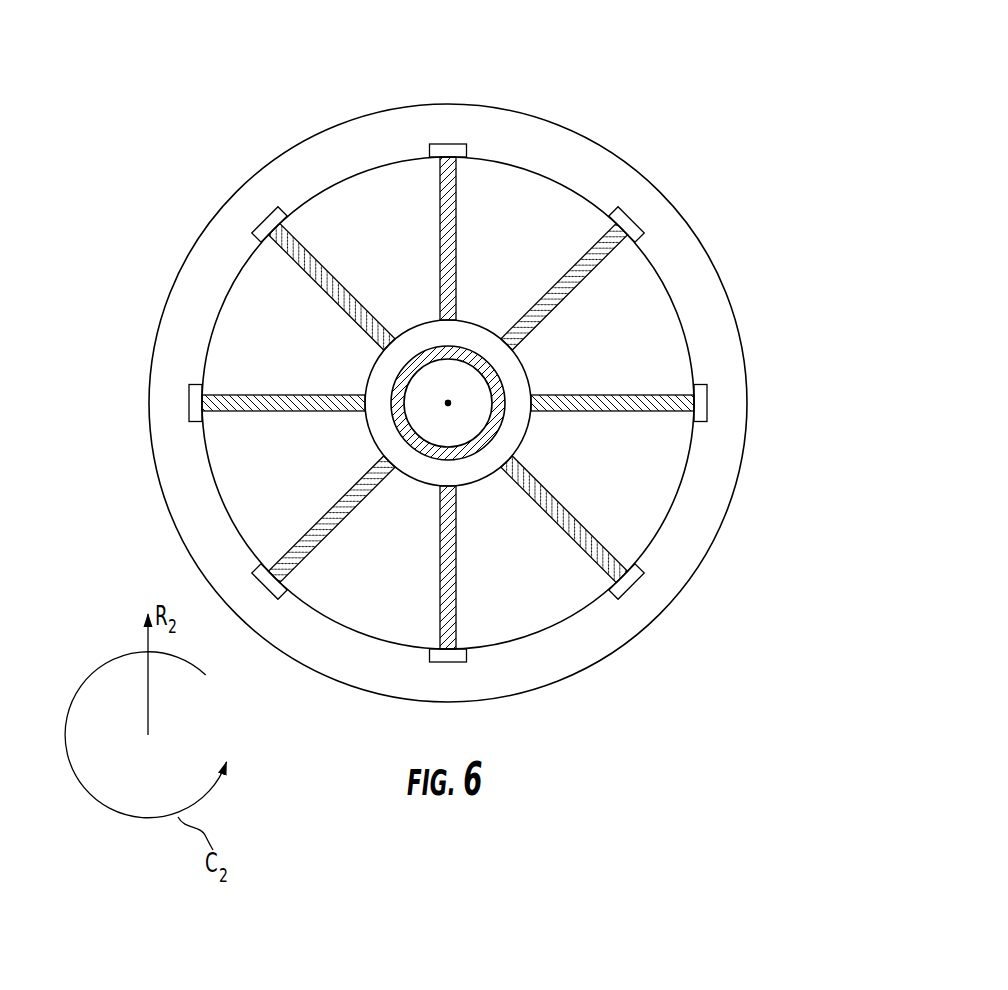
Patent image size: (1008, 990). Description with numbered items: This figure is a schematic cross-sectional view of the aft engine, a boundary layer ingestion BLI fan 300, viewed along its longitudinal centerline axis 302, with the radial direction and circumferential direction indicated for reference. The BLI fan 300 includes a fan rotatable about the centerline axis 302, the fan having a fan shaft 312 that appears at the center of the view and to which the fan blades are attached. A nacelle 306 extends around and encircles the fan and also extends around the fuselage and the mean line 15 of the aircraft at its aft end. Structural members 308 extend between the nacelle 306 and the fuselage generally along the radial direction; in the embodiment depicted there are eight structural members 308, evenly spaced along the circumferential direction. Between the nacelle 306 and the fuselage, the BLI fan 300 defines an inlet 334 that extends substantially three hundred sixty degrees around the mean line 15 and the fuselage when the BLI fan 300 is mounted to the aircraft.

The BLI fan 300 is at (495, 396).
The longitudinal centerline axis 302 is at (448, 403).
The mean line 15 is at (448, 403).
The nacelle 306 is at (338, 160).
The structural members 308 is at (462, 222).
The fan shaft 312 is at (475, 353).
The inlet 334 is at (655, 357).